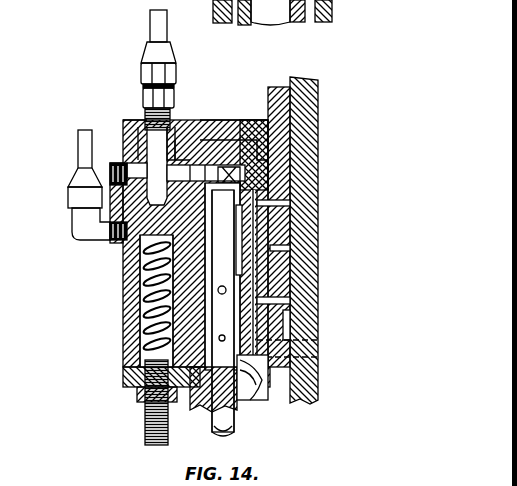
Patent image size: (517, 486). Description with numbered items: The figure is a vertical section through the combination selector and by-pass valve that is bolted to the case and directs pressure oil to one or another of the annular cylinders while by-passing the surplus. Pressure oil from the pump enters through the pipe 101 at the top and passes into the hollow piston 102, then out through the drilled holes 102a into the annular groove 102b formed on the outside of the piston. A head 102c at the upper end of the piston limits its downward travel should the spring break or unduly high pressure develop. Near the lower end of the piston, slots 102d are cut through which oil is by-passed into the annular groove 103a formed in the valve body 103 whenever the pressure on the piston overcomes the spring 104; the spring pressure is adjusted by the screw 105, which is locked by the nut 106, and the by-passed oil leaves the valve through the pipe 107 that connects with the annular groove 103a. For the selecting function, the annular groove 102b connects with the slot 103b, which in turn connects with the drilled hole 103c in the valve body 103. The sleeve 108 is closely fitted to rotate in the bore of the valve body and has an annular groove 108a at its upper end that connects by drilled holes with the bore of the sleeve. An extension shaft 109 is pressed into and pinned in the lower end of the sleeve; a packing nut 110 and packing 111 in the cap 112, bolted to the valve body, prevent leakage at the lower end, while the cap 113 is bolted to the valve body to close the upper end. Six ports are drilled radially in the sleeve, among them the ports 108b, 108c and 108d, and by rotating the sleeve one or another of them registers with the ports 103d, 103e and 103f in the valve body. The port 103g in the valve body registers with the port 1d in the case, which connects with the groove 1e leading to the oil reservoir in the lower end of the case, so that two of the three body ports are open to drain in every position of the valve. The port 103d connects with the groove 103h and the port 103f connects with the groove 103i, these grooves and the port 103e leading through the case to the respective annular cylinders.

The pipe 101 is at (156, 36).
The cap 113 is at (138, 116).
The hollow piston 102 is at (125, 258).
The drilled holes 102a is at (142, 158).
The annular groove 102b is at (178, 145).
The head 102c is at (172, 135).
The slots 102d is at (152, 206).
The valve body 103 is at (123, 160).
The annular groove 103a is at (110, 235).
The slot 103b is at (200, 140).
The drilled hole 103c is at (118, 172).
The port 103d is at (282, 293).
The port 103e is at (275, 250).
The port 103f is at (268, 203).
The port 103g is at (282, 372).
The groove 103h is at (290, 320).
The groove 103i is at (275, 145).
The spring 104 is at (148, 345).
The screw 105 is at (145, 423).
The nut 106 is at (138, 394).
The pipe 107 is at (82, 150).
The sleeve 108 is at (140, 282).
The annular groove 108a is at (250, 168).
The port 108b is at (236, 282).
The port 108c is at (268, 233).
The port 108d is at (252, 195).
The extension shaft 109 is at (236, 428).
The packing nut 110 is at (196, 405).
The packing 111 is at (258, 382).
The cap 112 is at (125, 376).
The port 1d is at (292, 345).
The groove 1e is at (312, 392).